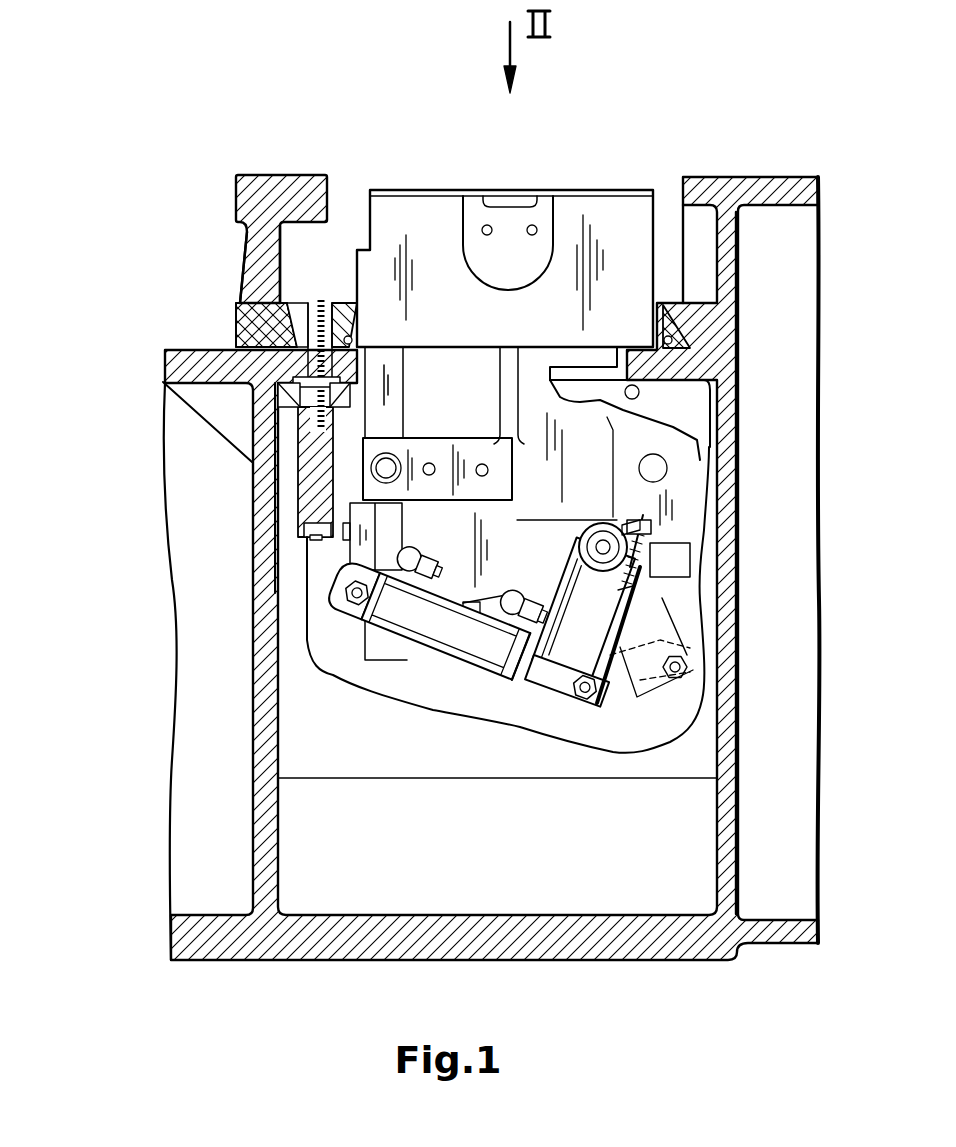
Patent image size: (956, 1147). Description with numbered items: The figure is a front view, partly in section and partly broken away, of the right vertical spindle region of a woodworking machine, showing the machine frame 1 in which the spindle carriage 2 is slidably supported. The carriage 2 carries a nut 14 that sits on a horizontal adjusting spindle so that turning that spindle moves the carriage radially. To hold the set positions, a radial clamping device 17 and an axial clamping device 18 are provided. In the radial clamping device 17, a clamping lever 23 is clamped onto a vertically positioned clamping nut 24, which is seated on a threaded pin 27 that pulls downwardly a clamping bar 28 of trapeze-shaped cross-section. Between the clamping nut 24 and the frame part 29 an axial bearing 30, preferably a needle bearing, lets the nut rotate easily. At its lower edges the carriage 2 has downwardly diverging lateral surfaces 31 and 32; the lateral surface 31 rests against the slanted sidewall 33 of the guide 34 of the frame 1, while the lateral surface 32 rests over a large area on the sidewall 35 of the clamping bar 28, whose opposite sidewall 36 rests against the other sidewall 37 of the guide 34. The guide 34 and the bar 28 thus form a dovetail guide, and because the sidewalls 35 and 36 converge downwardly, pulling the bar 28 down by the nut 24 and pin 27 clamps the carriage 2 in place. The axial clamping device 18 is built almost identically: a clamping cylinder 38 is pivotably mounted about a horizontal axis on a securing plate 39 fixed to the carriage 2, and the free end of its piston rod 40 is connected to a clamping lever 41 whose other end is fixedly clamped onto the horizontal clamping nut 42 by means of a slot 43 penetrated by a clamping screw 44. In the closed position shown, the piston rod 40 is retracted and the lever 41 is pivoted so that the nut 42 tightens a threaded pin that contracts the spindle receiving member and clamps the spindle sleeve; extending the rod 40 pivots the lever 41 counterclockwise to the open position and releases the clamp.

The machine frame 1 is at (266, 165).
The spindle carriage 2 is at (427, 225).
The nut 14 is at (405, 488).
The radial clamping device 17 is at (297, 497).
The axial clamping device 18 is at (447, 665).
The clamping lever 23 is at (300, 398).
The clamping nut 24 is at (302, 458).
The threaded pin 27 is at (305, 335).
The clamping bar 28 is at (332, 305).
The frame part 29 is at (345, 367).
The axial bearing 30 is at (298, 378).
The lateral surface 31 is at (712, 304).
The lateral surface 32 is at (357, 320).
The sidewall 33 is at (697, 333).
The guide 34 is at (683, 343).
The sidewall 35 is at (350, 305).
The sidewall 36 is at (303, 355).
The sidewall 37 is at (300, 322).
The clamping cylinder 38 is at (413, 633).
The securing plate 39 is at (350, 562).
The piston rod 40 is at (530, 667).
The clamping lever 41 is at (650, 665).
The clamping nut 42 is at (647, 537).
The slot 43 is at (692, 560).
The clamping screw 44 is at (653, 590).